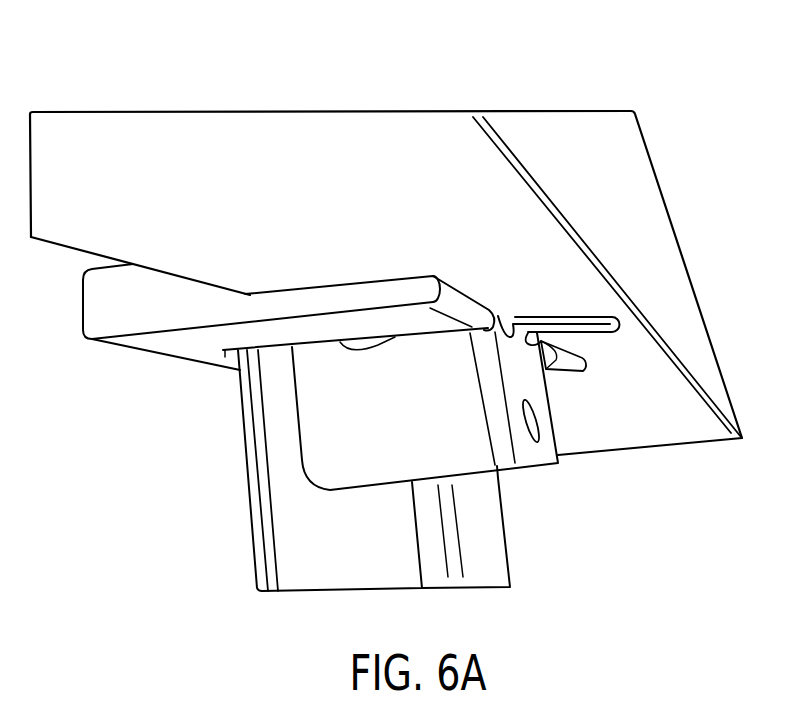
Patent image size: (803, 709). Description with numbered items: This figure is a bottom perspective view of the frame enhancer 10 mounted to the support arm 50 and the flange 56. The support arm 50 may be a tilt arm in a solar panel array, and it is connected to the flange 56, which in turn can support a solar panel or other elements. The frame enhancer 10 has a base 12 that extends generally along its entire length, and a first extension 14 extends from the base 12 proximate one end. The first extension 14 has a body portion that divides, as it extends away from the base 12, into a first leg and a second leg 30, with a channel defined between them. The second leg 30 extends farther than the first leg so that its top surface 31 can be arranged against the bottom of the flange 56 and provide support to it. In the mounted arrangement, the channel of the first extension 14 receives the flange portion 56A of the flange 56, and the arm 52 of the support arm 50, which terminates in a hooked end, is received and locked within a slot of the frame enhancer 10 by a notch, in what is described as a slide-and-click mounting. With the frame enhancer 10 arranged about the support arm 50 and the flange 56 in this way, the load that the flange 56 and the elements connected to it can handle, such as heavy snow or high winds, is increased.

The flange 56 is at (213, 162).
The flange portion 56A is at (293, 282).
The top surface 31 is at (373, 276).
The frame enhancer 10 is at (93, 302).
The base 12 is at (87, 340).
The first extension 14 is at (259, 312).
The second leg 30 is at (350, 298).
The support arm 50 is at (498, 568).
The arm 52 is at (323, 568).